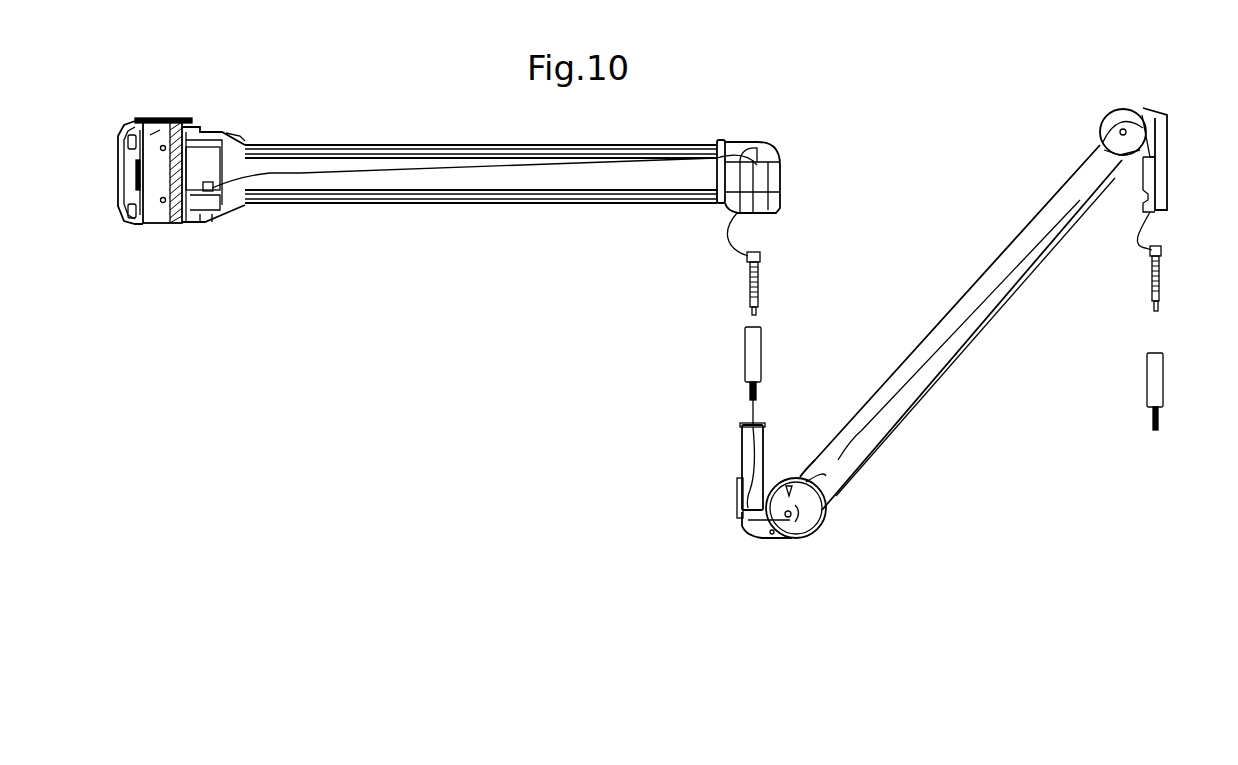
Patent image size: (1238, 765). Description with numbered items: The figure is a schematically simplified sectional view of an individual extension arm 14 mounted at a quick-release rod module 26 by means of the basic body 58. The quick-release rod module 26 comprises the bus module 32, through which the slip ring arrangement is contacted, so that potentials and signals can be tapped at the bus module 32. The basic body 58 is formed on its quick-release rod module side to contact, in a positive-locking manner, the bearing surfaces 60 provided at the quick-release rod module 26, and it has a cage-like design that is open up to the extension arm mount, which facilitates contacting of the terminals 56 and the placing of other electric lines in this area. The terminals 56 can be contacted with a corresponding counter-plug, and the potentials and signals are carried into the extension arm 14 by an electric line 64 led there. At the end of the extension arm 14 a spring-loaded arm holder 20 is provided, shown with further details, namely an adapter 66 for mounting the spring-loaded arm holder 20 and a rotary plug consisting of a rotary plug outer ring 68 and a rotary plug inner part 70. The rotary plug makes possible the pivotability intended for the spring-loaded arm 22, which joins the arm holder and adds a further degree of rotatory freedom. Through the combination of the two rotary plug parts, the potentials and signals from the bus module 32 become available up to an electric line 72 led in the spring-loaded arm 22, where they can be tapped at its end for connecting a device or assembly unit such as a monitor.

The extension arm 14 is at (432, 195).
The spring-loaded arm holder 20 is at (797, 200).
The spring-loaded arm 22 is at (740, 500).
The quick-release rod module 26 is at (183, 228).
The bus module 32 is at (173, 205).
The terminals 56 is at (218, 191).
The basic body 58 is at (210, 210).
The bearing surfaces 60 is at (137, 180).
The electric line 64 is at (347, 177).
The adapter 66 is at (728, 210).
The rotary plug outer ring 68 is at (748, 283).
The rotary plug inner part 70 is at (744, 347).
The electric line 72 is at (745, 535).